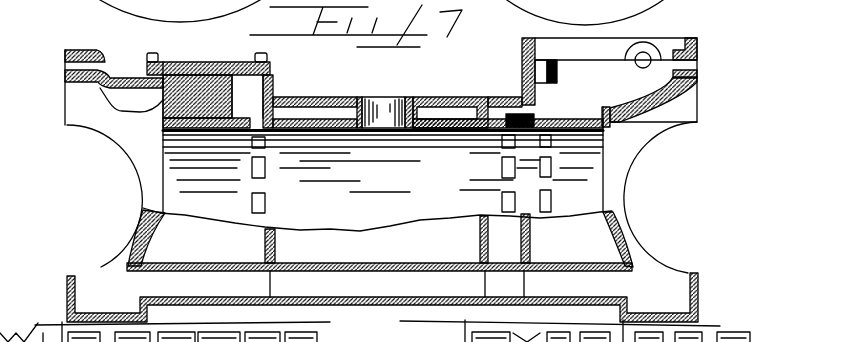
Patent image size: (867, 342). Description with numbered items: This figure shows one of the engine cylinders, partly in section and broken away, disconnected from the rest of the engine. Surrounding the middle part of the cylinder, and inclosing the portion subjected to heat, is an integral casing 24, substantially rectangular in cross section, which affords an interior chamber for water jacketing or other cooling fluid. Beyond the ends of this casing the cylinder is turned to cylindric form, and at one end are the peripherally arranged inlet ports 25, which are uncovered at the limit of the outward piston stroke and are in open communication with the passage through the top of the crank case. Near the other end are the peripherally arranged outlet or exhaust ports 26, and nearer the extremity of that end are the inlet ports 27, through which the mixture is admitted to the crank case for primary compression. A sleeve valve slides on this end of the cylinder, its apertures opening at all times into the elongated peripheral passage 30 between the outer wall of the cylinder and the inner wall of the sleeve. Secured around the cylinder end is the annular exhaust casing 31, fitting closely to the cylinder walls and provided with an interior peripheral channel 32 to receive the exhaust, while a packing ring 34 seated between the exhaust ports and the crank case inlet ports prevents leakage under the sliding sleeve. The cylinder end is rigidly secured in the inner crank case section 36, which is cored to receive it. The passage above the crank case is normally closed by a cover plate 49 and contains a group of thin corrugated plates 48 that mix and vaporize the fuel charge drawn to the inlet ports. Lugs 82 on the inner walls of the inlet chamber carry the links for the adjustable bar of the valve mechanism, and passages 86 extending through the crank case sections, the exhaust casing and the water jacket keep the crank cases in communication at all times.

The cover plate 49 is at (175, 62).
The corrugated plate 48 is at (208, 85).
The inlet port 25 is at (263, 140).
The casing 24 is at (458, 95).
The annular fitting or exhaust casing 31 is at (510, 80).
The lug 82 is at (537, 45).
The elongated peripheral passage 30 is at (572, 118).
The inner crank case section 36 is at (657, 94).
The packing ring 34 is at (522, 120).
The inlet port 27 is at (550, 200).
The outlet or exhaust port 26 is at (513, 137).
The interior peripheral channel or chamber 32 is at (502, 245).
The passage 86 is at (612, 283).